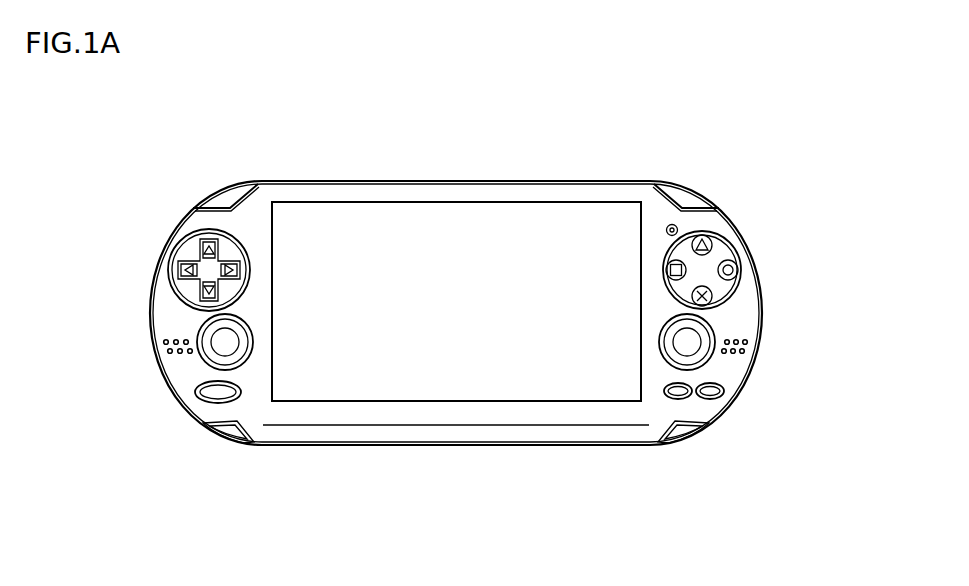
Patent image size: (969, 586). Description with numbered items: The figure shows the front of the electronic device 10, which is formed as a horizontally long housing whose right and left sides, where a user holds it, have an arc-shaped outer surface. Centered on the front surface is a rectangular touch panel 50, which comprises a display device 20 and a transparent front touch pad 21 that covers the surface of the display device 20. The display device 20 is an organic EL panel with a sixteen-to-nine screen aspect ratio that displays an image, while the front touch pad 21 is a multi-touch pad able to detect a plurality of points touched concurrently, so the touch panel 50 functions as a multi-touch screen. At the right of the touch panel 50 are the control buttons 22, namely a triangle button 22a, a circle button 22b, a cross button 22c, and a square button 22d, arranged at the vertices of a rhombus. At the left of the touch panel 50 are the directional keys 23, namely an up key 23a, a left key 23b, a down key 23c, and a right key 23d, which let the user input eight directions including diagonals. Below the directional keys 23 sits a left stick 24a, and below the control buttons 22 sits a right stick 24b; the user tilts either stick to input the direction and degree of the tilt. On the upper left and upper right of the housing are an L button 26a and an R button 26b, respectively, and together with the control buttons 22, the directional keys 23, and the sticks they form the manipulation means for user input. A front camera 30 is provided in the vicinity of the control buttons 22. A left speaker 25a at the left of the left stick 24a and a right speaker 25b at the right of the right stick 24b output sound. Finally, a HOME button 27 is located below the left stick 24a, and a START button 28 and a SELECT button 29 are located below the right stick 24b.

The electronic device 10 is at (469, 571).
The display device 20 is at (452, 215).
The front touch pad 21 is at (456, 267).
The touch panel 50 is at (512, 134).
The control buttons 22 is at (826, 207).
The triangle button 22a is at (712, 248).
The circle button 22b is at (738, 270).
The cross button 22c is at (712, 296).
The square button 22d is at (686, 272).
The directional keys 23 is at (86, 207).
The up key 23a is at (197, 252).
The left key 23b is at (180, 268).
The down key 23c is at (200, 292).
The right key 23d is at (236, 270).
The left stick 24a is at (205, 352).
The right stick 24b is at (712, 352).
The left speaker 25a is at (165, 343).
The right speaker 25b is at (742, 345).
The L button 26a is at (222, 192).
The R button 26b is at (688, 195).
The HOME button 27 is at (205, 390).
The START button 28 is at (722, 392).
The SELECT button 29 is at (678, 398).
The front camera 30 is at (670, 223).